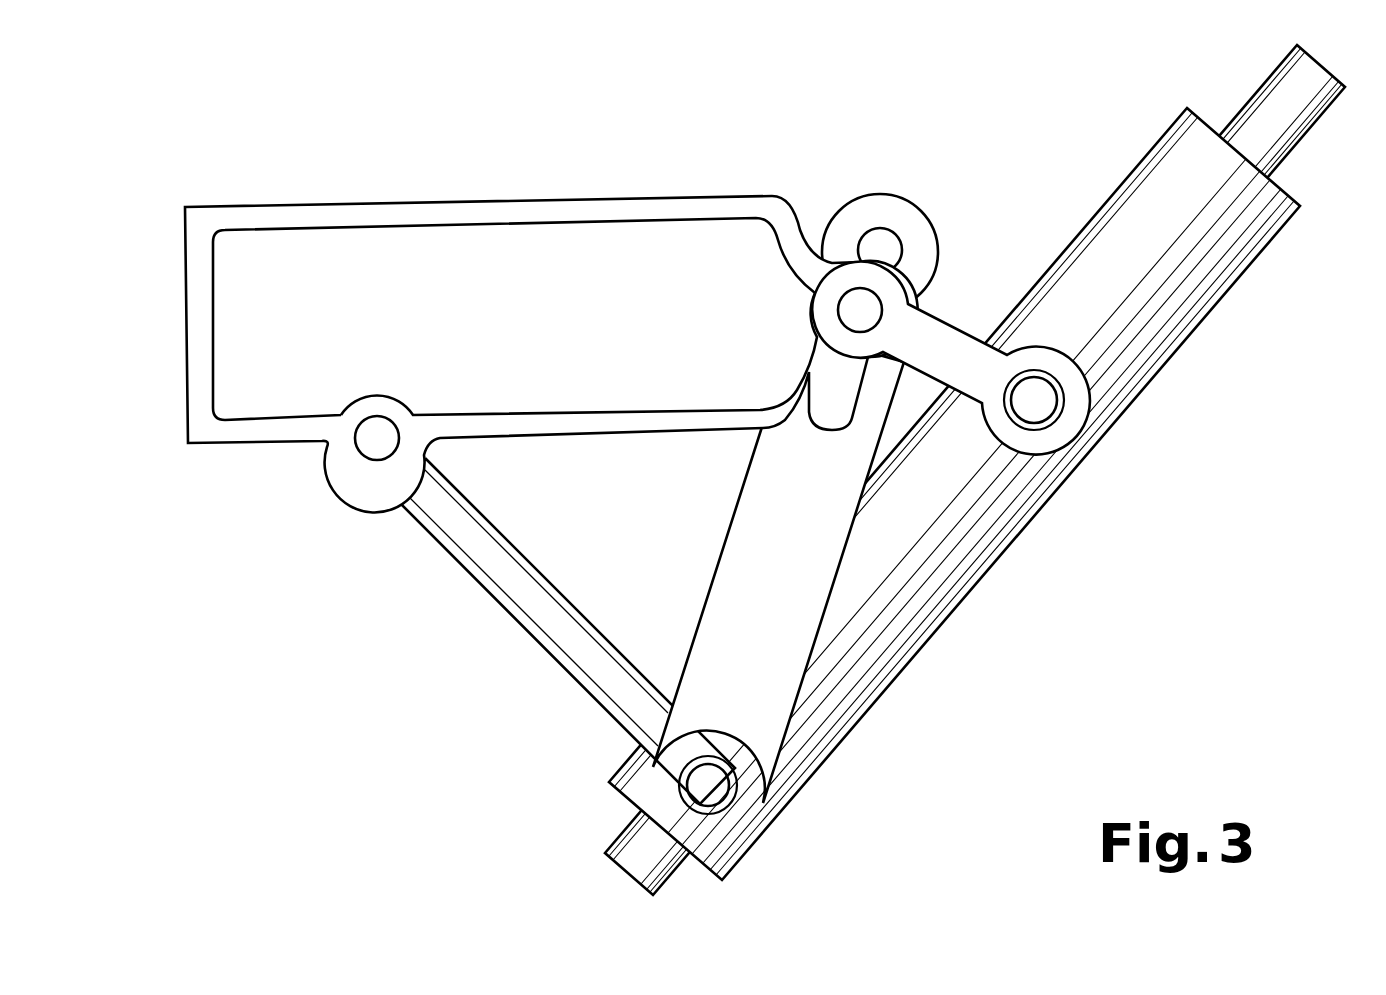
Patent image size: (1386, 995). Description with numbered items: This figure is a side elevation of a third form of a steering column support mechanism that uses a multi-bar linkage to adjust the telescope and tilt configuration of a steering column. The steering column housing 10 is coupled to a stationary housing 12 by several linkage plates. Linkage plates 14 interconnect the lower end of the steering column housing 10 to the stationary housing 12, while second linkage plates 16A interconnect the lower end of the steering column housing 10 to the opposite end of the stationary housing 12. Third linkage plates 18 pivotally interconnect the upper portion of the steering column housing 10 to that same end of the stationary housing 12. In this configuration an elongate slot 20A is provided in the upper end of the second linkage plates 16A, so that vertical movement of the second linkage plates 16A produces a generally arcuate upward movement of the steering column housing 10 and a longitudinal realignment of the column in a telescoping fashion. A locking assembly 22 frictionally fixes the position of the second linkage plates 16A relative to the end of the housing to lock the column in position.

The steering column housing 10 is at (1166, 347).
The stationary housing 12 is at (563, 212).
The linkage plates 14 is at (598, 636).
The second linkage plates 16A is at (747, 531).
The third linkage plates 18 is at (957, 350).
The elongate slot 20A is at (903, 251).
The locking assembly 22 is at (850, 310).